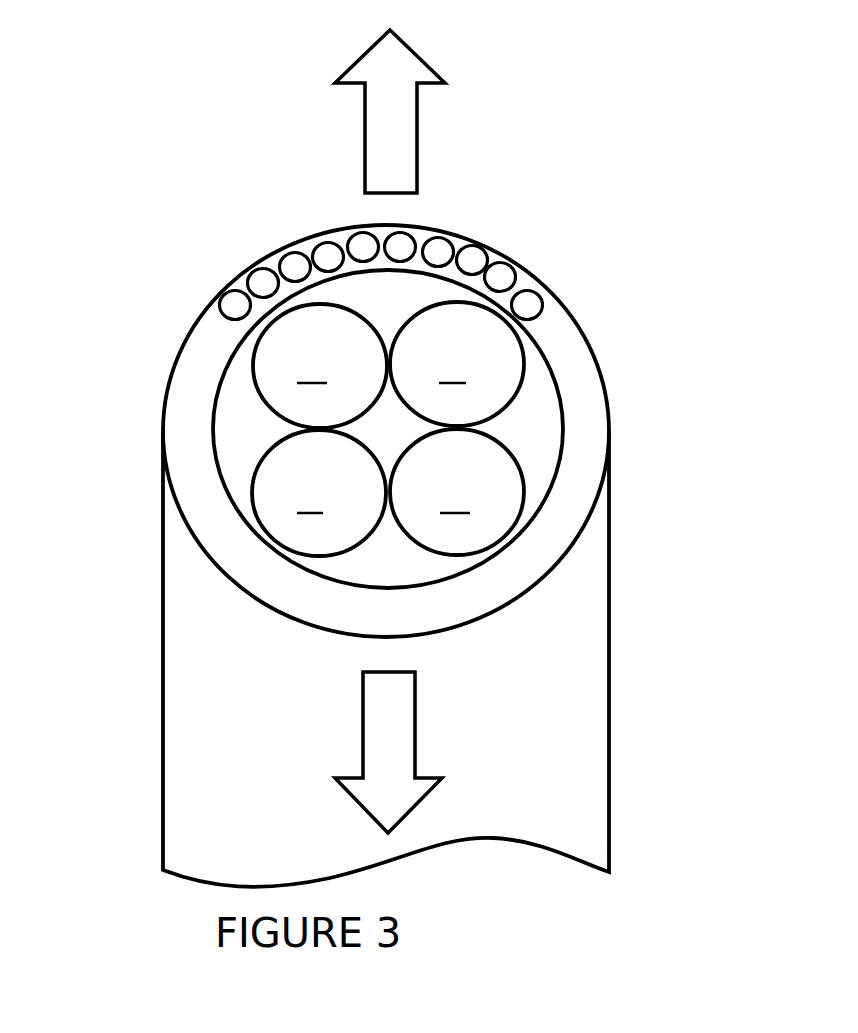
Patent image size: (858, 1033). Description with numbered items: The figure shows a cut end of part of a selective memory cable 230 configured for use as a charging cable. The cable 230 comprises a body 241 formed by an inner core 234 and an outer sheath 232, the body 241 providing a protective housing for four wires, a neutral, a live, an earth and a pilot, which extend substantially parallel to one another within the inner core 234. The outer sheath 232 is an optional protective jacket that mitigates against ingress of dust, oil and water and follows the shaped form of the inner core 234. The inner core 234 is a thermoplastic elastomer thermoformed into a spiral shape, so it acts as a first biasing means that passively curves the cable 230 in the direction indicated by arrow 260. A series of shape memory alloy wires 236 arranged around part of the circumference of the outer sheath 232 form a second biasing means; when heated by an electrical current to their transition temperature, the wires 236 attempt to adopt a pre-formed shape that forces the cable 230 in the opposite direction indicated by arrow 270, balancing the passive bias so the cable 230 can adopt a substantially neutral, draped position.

The selective memory cable 230 is at (454, 556).
The outer sheath 232 is at (582, 365).
The inner core 234 is at (233, 407).
The shape memory alloy wires 236 is at (530, 300).
The body 241 is at (609, 665).
The biasing direction arrow 260 is at (412, 695).
The counter-biasing direction arrow 270 is at (422, 62).